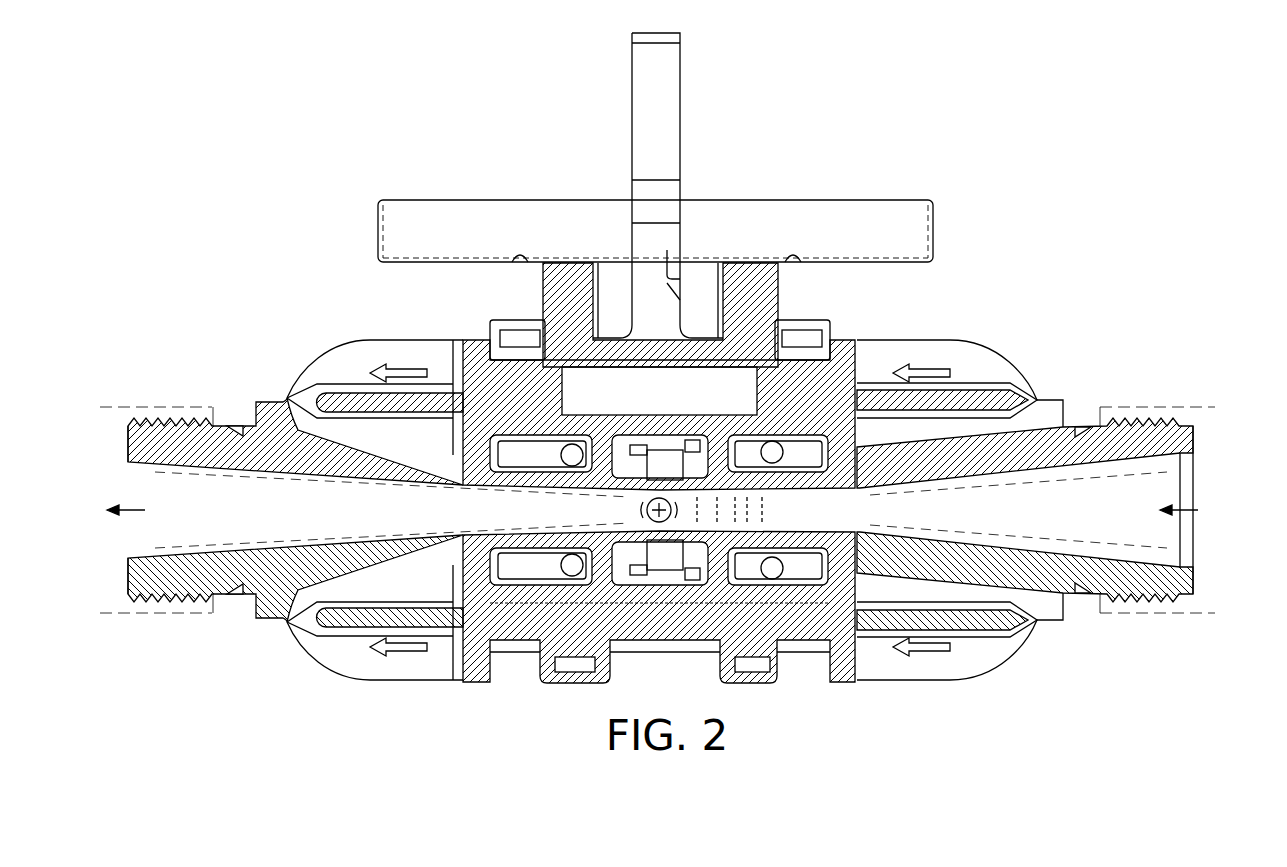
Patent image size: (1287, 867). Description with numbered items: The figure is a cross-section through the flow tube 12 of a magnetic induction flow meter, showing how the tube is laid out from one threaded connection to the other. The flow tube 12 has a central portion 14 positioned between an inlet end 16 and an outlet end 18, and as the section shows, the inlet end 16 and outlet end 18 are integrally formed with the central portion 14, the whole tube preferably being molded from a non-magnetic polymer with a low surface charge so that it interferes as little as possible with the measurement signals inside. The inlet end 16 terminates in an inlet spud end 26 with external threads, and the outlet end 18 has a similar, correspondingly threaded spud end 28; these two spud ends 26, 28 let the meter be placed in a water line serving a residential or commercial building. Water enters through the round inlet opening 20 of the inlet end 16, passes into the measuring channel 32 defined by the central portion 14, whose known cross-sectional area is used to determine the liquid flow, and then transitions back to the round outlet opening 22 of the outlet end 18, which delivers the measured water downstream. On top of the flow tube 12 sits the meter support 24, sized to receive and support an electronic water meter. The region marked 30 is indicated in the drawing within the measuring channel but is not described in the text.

The housing body 12 is at (480, 684).
The housing cover 14 is at (860, 340).
The inlet conduit 16 is at (1052, 570).
The outlet conduit 18 is at (289, 446).
The inlet port 20 is at (1187, 494).
The outlet port 22 is at (145, 490).
The electronics cap 24 is at (944, 212).
The inlet threads 26 is at (1150, 425).
The outlet threads 28 is at (163, 420).
The flow path 30 is at (779, 512).
The flow sensor 32 is at (617, 502).